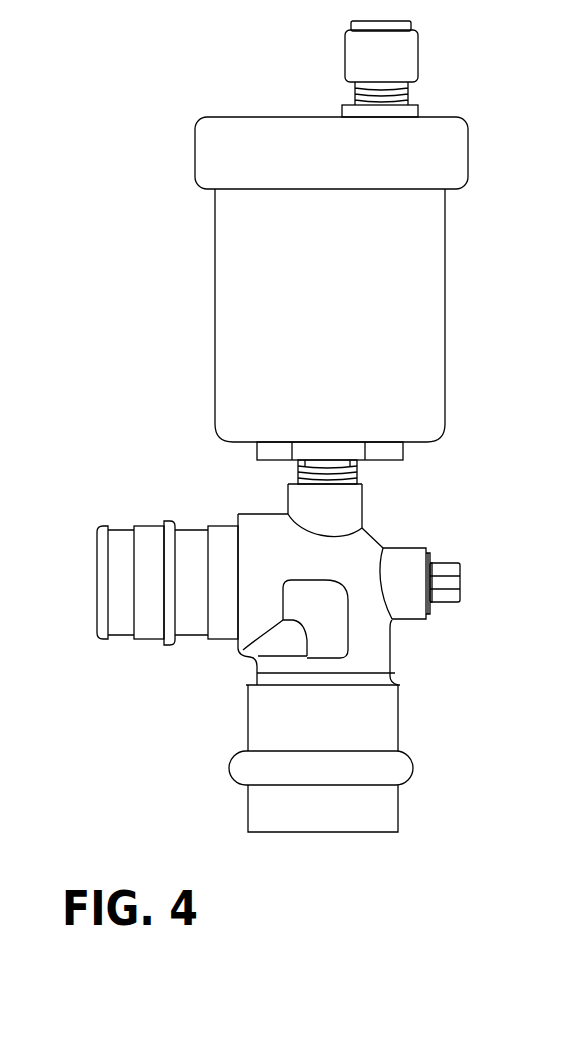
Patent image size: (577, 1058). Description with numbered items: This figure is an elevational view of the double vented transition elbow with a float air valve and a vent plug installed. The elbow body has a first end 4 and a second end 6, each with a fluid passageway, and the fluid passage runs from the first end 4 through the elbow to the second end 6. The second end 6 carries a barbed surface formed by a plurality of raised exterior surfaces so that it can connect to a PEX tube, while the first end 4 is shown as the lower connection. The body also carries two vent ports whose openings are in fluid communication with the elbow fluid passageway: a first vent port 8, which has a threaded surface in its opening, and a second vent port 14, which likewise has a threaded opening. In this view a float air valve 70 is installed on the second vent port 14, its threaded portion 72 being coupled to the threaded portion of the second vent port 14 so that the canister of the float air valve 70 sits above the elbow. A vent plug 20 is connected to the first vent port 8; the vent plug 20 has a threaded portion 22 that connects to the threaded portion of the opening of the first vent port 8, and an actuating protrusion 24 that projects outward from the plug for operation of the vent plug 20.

The first end 4 is at (380, 720).
The second end 6 is at (148, 618).
The first vent port 8 is at (413, 558).
The second vent port 14 is at (310, 503).
The vent plug 20 is at (440, 555).
The threaded portion 22 is at (428, 612).
The actuating protrusion 24 is at (448, 590).
The float air valve 70 is at (383, 328).
The threaded portion 72 is at (357, 477).